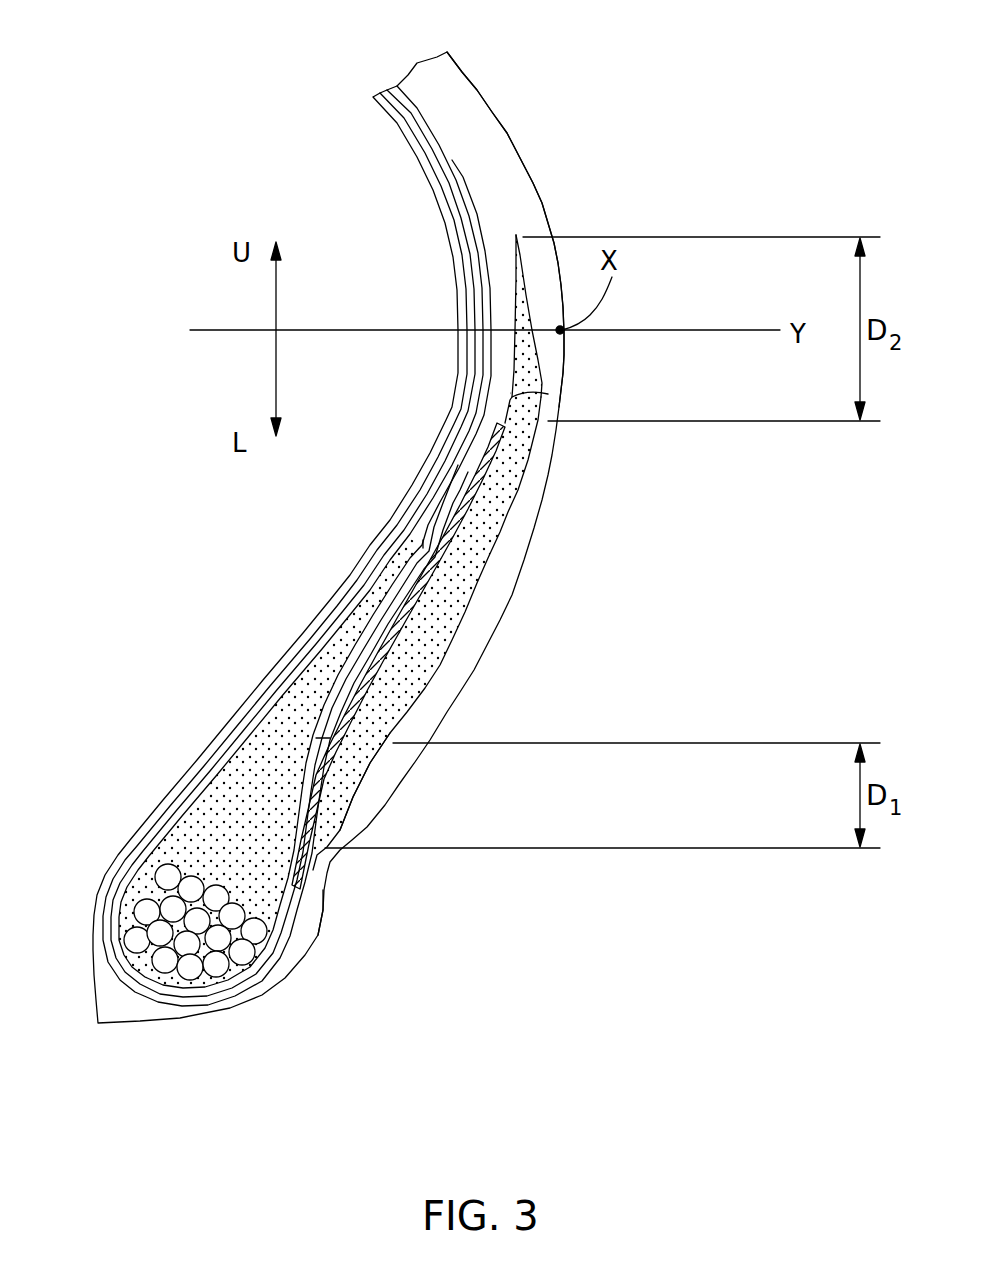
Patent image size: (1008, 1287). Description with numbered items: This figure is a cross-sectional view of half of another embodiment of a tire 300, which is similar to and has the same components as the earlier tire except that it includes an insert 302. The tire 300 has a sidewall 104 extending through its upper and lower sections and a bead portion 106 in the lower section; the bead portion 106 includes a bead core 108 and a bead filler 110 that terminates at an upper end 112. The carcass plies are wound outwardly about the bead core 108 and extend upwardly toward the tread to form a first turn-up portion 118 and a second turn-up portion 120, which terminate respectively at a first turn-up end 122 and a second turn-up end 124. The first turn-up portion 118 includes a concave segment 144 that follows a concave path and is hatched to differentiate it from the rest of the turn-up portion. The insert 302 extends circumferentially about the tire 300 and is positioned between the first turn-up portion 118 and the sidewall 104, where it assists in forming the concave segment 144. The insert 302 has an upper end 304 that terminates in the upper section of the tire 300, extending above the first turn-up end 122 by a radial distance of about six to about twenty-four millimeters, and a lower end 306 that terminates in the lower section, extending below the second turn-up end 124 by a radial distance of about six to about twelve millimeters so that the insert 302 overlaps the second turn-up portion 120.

The tire 300 is at (789, 108).
The sidewall 104 is at (517, 137).
The upper end 304 is at (516, 235).
The insert 302 is at (508, 496).
The turn-up end 122 is at (548, 394).
The upper end 112 is at (423, 545).
The first turn-up portion 118 is at (419, 603).
The concave segment 144 is at (352, 745).
The turn-up end 124 is at (322, 738).
The second turn-up portion 120 is at (288, 811).
The bead filler 110 is at (205, 813).
The bead portion 106 is at (114, 823).
The bead core 108 is at (155, 901).
The lower end 306 is at (318, 853).